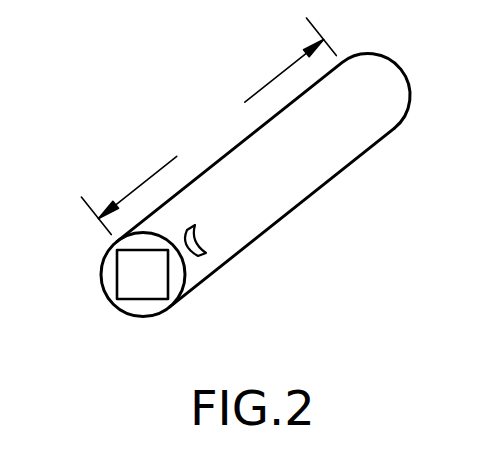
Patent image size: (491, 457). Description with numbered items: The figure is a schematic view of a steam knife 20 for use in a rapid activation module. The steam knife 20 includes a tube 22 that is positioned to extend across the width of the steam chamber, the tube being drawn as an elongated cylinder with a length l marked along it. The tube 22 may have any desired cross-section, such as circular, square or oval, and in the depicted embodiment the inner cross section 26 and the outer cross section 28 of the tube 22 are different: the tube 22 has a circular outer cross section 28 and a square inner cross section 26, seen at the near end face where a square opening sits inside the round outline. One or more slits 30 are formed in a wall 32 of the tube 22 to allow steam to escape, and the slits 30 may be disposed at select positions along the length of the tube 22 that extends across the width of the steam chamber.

The steam knife 20 is at (161, 181).
The tube 22 is at (323, 208).
The inner cross section 26 is at (169, 279).
The outer cross section 28 is at (106, 294).
The slit 30 is at (207, 249).
The wall 32 is at (268, 202).